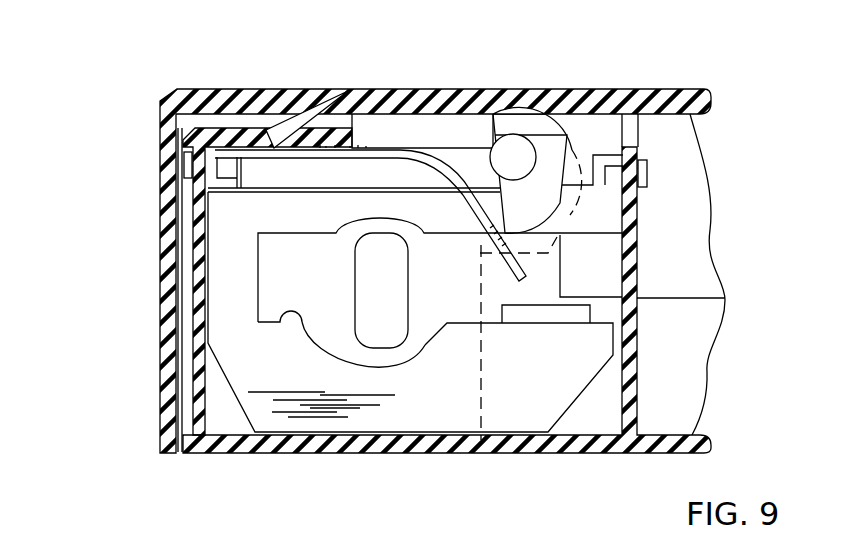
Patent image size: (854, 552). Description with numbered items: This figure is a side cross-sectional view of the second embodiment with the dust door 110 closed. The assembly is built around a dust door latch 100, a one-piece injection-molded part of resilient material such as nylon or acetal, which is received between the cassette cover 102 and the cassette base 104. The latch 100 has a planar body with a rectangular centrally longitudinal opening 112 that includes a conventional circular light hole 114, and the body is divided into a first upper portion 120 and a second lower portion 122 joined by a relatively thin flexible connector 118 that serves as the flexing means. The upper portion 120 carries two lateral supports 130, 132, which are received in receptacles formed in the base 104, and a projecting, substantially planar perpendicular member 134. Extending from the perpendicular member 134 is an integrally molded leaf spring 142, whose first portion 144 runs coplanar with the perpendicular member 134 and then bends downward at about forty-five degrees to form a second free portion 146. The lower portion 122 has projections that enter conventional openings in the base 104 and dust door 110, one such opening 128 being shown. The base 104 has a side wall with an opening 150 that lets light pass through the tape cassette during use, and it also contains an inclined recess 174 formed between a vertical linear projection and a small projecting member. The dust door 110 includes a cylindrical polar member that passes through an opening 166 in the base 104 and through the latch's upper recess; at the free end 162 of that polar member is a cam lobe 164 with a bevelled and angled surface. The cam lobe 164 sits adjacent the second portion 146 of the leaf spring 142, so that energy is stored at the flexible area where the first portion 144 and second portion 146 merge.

The dust door latch 100 is at (580, 408).
The cassette cover 102 is at (706, 205).
The cassette base 104 is at (704, 378).
The dust door 110 is at (230, 98).
The centrally longitudinal opening 112 is at (302, 324).
The light hole 114 is at (416, 352).
The flexible connector 118 is at (240, 286).
The first upper portion 120 is at (206, 213).
The second lower portion 122 is at (378, 414).
The opening 128 is at (545, 306).
The lateral support 130 is at (188, 165).
The lateral support 132 is at (647, 170).
The perpendicular member 134 is at (212, 209).
The leaf spring 142 is at (420, 170).
The first portion 144 is at (378, 148).
The second free portion 146 is at (490, 244).
The opening 150 is at (360, 266).
The free end 162 is at (500, 167).
The cam lobe 164 is at (553, 222).
The opening 166 is at (513, 116).
The recess 174 is at (330, 130).